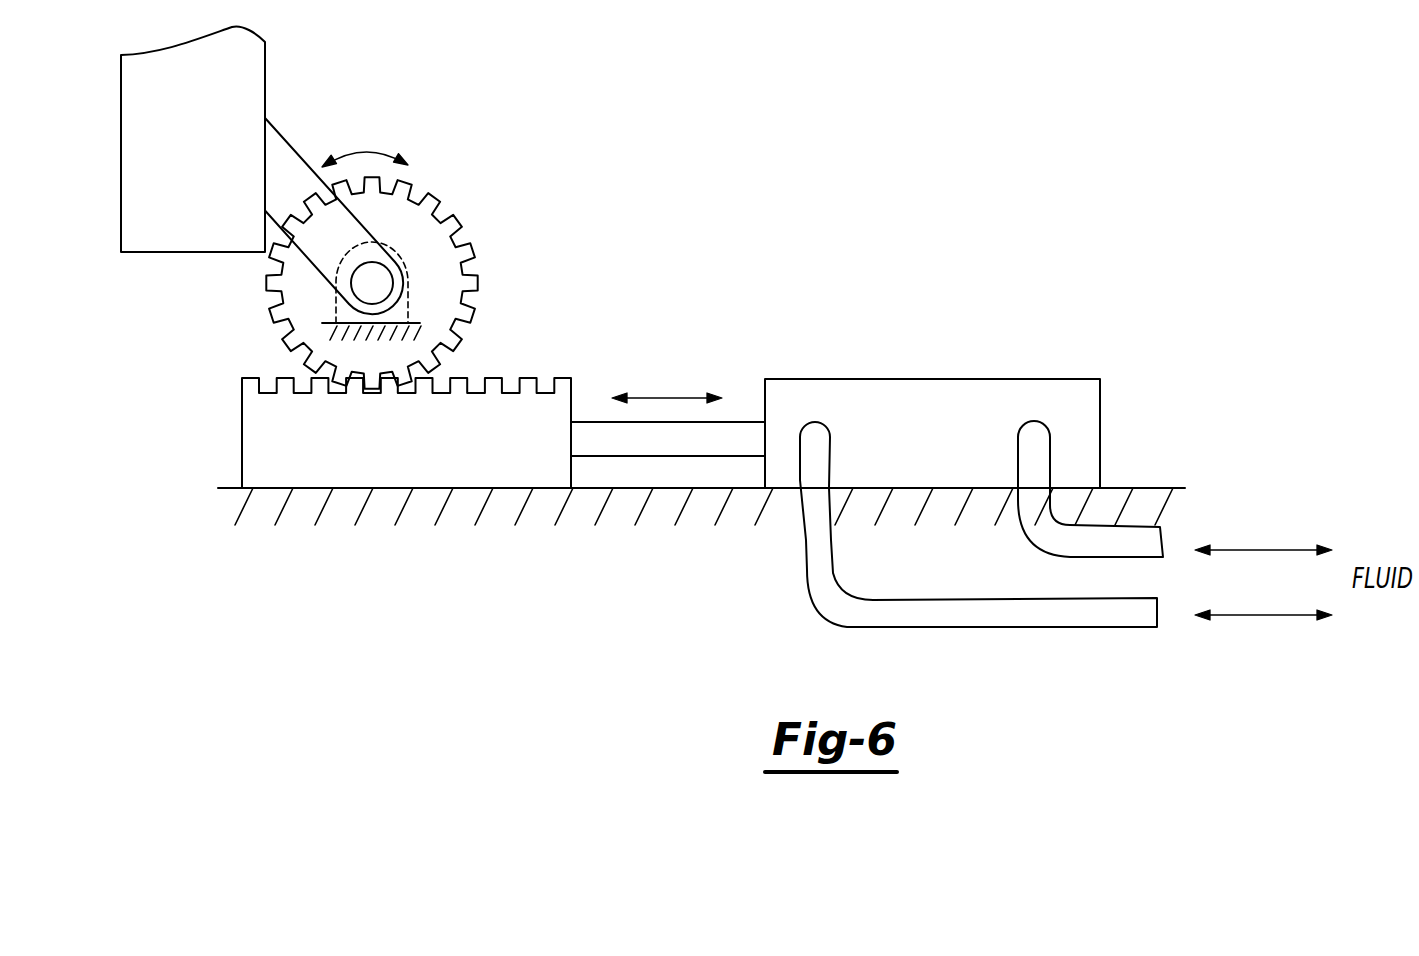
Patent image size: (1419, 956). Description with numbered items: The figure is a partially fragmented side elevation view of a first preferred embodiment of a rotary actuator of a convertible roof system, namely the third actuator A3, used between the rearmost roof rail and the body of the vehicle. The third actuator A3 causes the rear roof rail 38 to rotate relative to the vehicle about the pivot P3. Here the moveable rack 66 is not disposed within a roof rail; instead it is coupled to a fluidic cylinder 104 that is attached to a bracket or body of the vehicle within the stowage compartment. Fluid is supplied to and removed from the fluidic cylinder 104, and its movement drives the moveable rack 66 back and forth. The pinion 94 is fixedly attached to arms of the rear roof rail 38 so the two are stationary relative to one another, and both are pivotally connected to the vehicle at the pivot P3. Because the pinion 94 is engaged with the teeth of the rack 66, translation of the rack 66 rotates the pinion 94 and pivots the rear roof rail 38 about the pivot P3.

The rear roof rail 38 is at (253, 93).
The pinion 94 is at (443, 243).
The pivot P3 is at (378, 285).
The moveable rack 66 is at (422, 475).
The fluidic cylinder 104 is at (900, 406).
The third actuator A3 is at (675, 215).